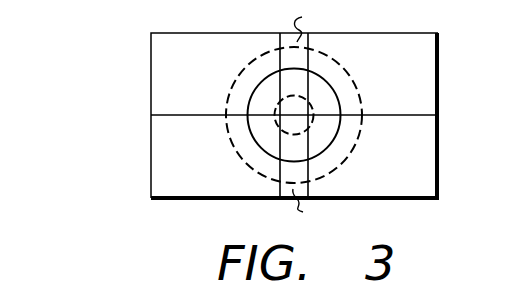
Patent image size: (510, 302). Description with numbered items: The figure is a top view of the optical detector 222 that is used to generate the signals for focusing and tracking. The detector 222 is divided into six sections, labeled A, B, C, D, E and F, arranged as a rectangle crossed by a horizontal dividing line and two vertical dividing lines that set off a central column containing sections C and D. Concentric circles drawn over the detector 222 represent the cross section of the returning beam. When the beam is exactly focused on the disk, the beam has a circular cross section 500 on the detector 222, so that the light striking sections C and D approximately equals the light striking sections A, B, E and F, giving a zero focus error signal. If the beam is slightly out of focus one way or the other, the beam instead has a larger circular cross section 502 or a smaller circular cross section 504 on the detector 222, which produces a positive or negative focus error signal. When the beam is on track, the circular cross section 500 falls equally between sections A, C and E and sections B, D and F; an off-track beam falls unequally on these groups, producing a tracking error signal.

The detector 222 is at (100, 110).
The circular cross section 500 is at (330, 82).
The circular cross section 502 is at (361, 100).
The circular cross section 504 is at (273, 128).